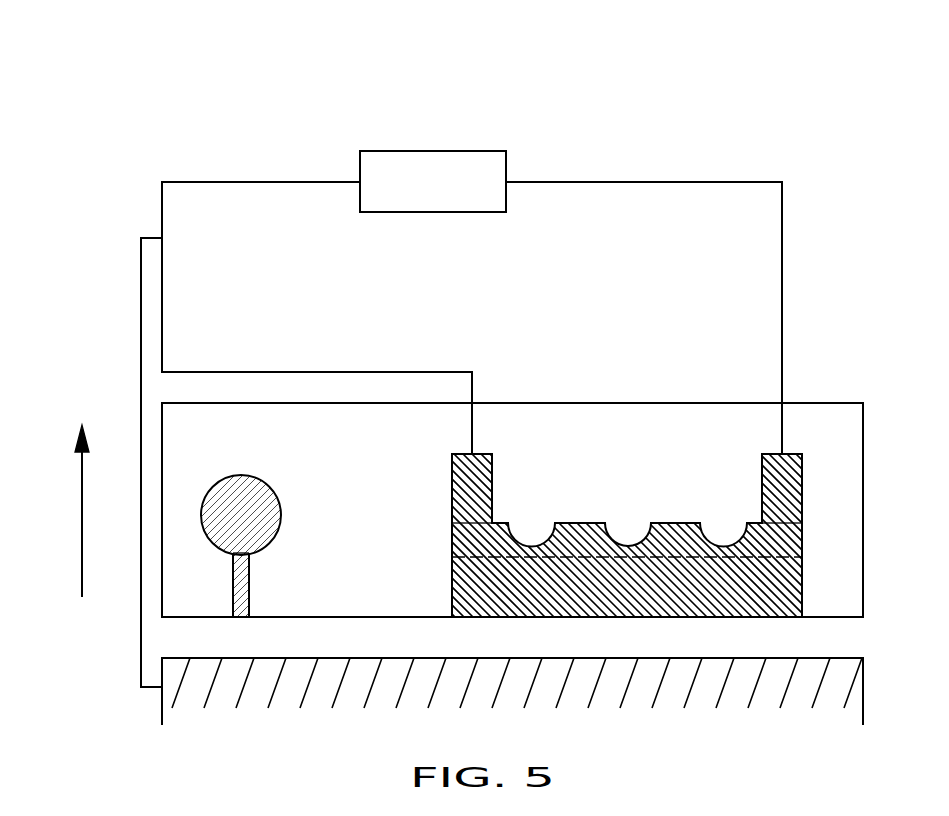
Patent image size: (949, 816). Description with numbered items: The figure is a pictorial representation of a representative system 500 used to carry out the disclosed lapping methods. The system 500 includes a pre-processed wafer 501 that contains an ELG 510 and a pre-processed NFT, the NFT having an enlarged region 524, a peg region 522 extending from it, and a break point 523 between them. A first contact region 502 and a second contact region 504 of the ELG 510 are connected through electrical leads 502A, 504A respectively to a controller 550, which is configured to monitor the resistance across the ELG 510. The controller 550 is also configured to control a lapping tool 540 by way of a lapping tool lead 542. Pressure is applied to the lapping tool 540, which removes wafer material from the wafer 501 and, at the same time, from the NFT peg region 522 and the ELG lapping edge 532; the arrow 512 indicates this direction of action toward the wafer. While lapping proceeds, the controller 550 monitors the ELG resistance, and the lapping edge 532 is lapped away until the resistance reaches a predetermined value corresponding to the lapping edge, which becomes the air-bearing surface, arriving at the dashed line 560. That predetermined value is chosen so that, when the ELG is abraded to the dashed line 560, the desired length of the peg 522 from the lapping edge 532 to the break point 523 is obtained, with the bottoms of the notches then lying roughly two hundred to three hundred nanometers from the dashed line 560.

The system 500 is at (148, 78).
The pre-processed wafer 501 is at (863, 411).
The first contact region 502 is at (473, 468).
The electrical lead 502A is at (472, 385).
The second contact region 504 is at (790, 453).
The electrical lead 504A is at (782, 313).
The ELG 510 is at (796, 511).
The flow direction 512 is at (80, 503).
The peg region 522 is at (249, 596).
The break point 523 is at (249, 557).
The enlarged region 524 is at (293, 477).
The lapping edge 532 is at (847, 618).
The lapping tool 540 is at (863, 677).
The lapping tool lead 542 is at (141, 356).
The controller 550 is at (439, 151).
The dashed line 560 is at (803, 557).